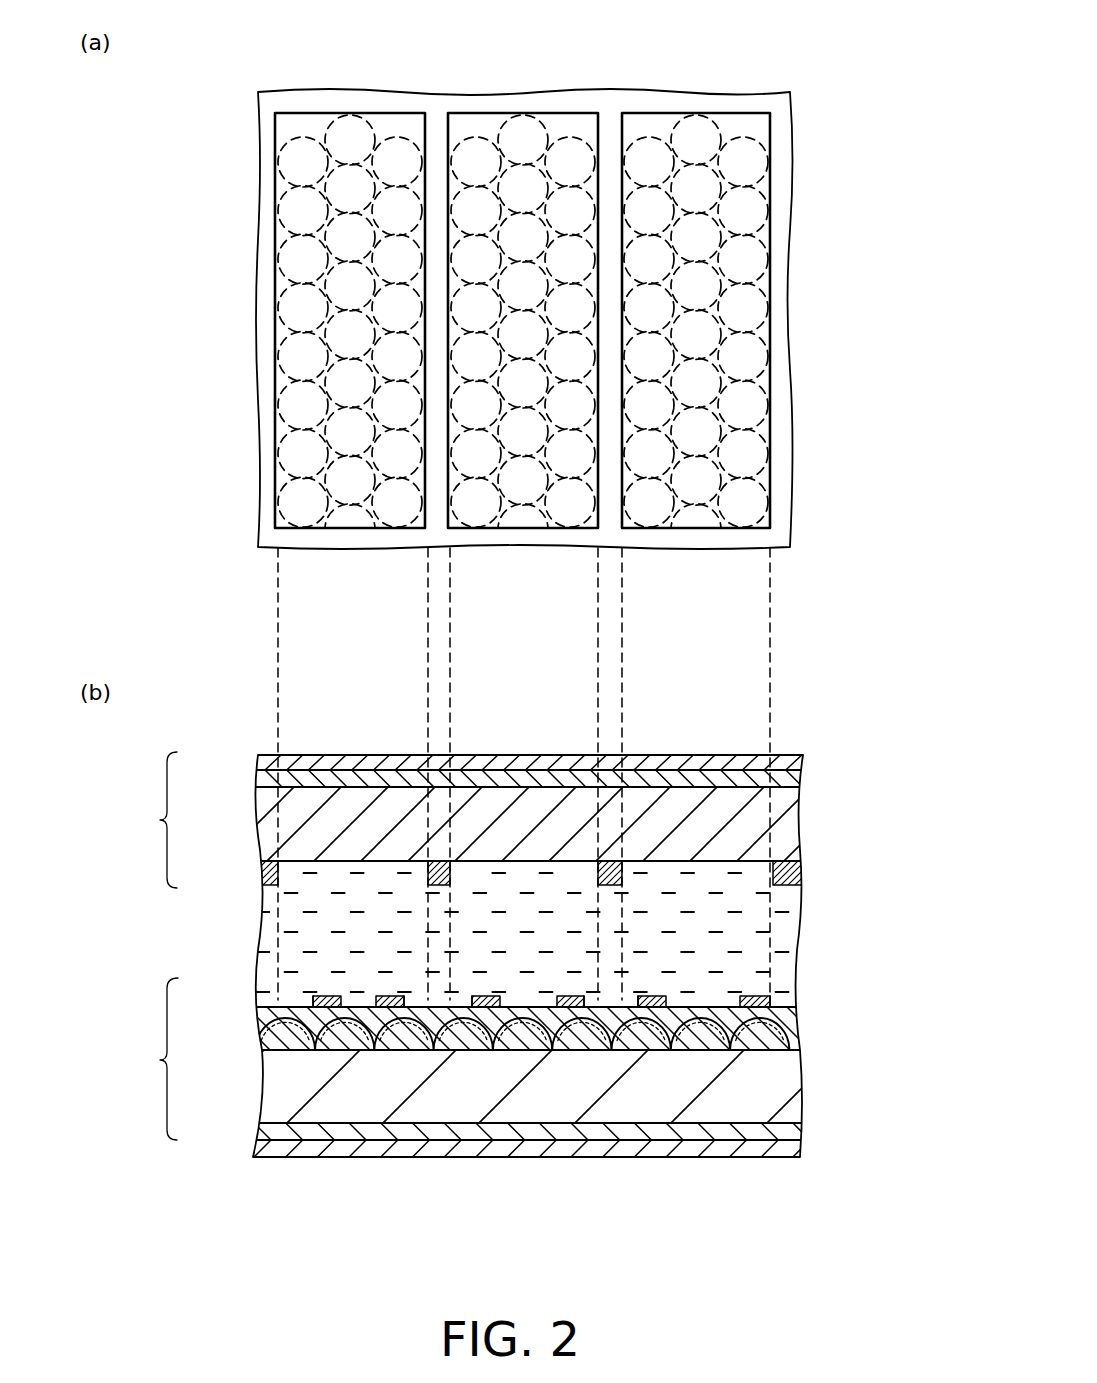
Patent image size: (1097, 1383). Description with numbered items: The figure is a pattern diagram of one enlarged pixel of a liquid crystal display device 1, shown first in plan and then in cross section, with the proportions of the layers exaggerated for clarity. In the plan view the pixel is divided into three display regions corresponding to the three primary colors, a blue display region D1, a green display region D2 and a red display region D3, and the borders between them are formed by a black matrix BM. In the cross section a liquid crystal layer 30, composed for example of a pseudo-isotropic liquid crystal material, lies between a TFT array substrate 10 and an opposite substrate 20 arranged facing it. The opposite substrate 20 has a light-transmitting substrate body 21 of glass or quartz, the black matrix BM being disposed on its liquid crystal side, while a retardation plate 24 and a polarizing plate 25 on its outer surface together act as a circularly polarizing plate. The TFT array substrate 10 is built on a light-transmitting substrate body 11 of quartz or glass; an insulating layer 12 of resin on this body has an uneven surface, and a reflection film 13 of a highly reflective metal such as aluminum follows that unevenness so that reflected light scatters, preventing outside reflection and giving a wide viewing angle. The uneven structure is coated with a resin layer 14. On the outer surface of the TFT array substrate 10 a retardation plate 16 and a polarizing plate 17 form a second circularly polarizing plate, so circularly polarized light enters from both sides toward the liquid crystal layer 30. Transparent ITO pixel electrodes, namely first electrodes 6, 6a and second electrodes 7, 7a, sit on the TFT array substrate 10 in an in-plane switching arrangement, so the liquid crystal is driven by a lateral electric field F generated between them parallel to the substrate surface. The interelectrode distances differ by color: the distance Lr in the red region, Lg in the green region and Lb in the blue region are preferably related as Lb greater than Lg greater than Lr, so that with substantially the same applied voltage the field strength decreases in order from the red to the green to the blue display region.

In FIG. 2A, the liquid crystal display device 1 is at (783, 62).
In FIG. 2B, the liquid crystal display device 1 is at (816, 704).
In FIG. 2A, the black matrix BM is at (790, 274).
In FIG. 2B, the black matrix BM is at (258, 876).
In FIG. 2A, the blue display region D1 is at (769, 583).
In FIG. 2A, the green display region D2 is at (597, 583).
In FIG. 2A, the red display region D3 is at (427, 583).
In FIG. 2B, the opposite substrate 20 is at (148, 820).
In FIG. 2B, the polarizing plate 25 is at (803, 760).
In FIG. 2B, the retardation plate 24 is at (800, 784).
In FIG. 2B, the substrate body 21 is at (765, 820).
In FIG. 2B, the liquid crystal layer 30 is at (765, 930).
In FIG. 2B, the TFT array substrate 10 is at (149, 1059).
In FIG. 2B, the second electrode 7 is at (313, 996).
In FIG. 2B, the second electrode 7a is at (266, 1013).
In FIG. 2B, the first electrode 6 is at (773, 1000).
In FIG. 2B, the first electrode 6a is at (587, 1001).
In FIG. 2B, the resin layer 14 is at (266, 1025).
In FIG. 2B, the reflection film 13 is at (265, 1042).
In FIG. 2B, the insulating layer 12 is at (263, 1055).
In FIG. 2B, the substrate body 11 is at (767, 1079).
In FIG. 2B, the retardation plate 16 is at (768, 1126).
In FIG. 2B, the polarizing plate 17 is at (768, 1146).
In FIG. 2B, the interelectrode distance at the red display region Lr is at (376, 986).
In FIG. 2B, the interelectrode distance at the green display region Lg is at (557, 986).
In FIG. 2B, the interelectrode distance at the blue display region Lb is at (740, 992).
In FIG. 2B, the lateral electric field F is at (680, 960).